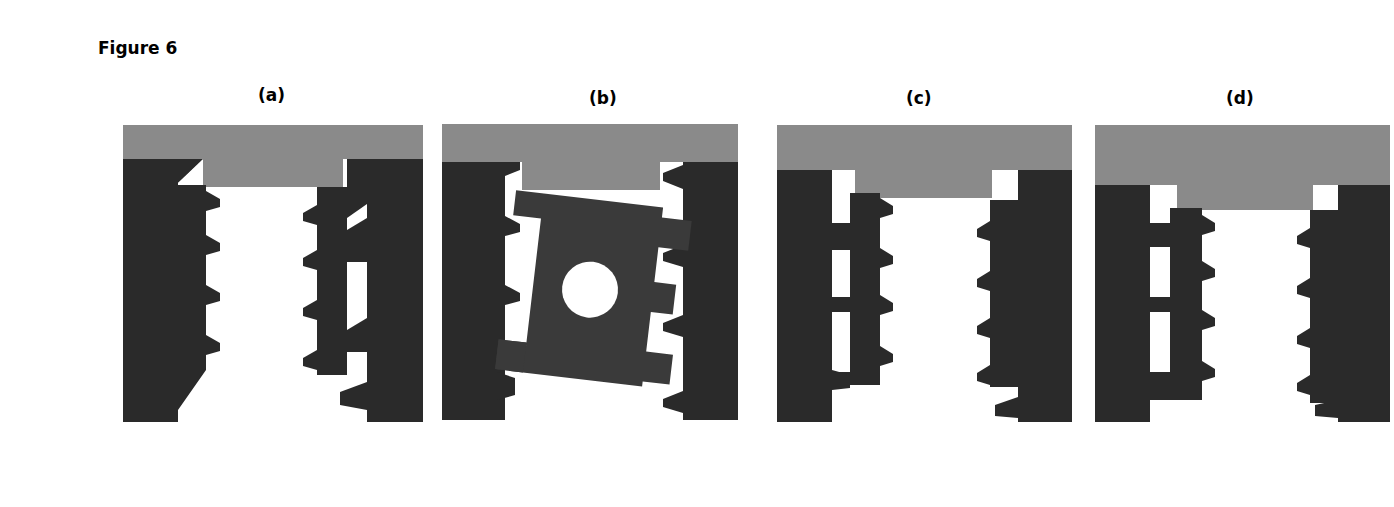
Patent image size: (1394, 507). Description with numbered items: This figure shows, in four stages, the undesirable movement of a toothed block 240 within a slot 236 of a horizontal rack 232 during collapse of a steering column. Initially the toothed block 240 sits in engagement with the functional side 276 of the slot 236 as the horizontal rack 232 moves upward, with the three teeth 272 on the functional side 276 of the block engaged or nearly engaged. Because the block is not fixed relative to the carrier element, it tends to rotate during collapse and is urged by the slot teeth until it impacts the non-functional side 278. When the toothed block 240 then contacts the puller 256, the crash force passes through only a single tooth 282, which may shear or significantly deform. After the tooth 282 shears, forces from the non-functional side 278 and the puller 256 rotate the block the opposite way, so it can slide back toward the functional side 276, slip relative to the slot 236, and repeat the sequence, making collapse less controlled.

The horizontal rack 232 is at (143, 392).
The slot 236 is at (212, 423).
The toothed block 240 is at (270, 353).
The puller 256 is at (610, 177).
The teeth 272 is at (190, 348).
The functional side 276 is at (180, 178).
The non-functional side 278 is at (362, 165).
The single tooth 282 is at (515, 380).